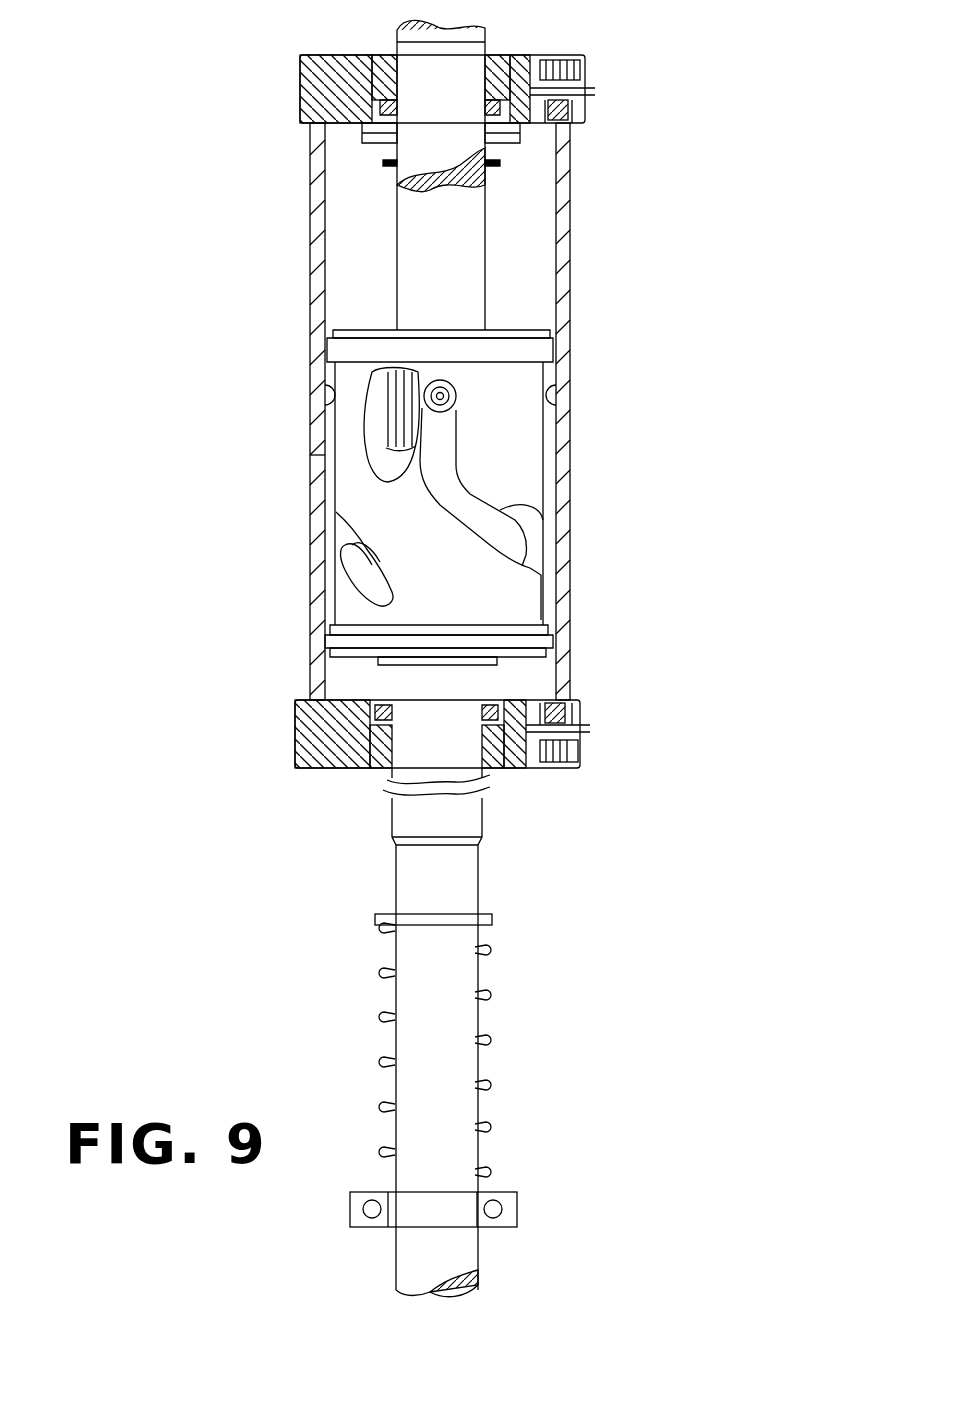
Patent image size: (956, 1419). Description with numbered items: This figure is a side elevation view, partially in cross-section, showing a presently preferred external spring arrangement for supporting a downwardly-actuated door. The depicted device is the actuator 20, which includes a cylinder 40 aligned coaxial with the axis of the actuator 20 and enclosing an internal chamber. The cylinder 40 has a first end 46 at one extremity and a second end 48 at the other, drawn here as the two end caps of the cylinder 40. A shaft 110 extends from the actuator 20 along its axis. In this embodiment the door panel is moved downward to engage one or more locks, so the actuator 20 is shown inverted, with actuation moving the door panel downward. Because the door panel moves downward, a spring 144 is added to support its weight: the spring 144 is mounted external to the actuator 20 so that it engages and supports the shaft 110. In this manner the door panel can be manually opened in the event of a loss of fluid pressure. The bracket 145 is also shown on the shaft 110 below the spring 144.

The actuator 20 is at (660, 212).
The cylinder 40 is at (572, 390).
The first end 46 is at (300, 88).
The second end 48 is at (297, 731).
The shaft 110 is at (465, 814).
The spring 144 is at (385, 1018).
The bracket 145 is at (517, 1208).